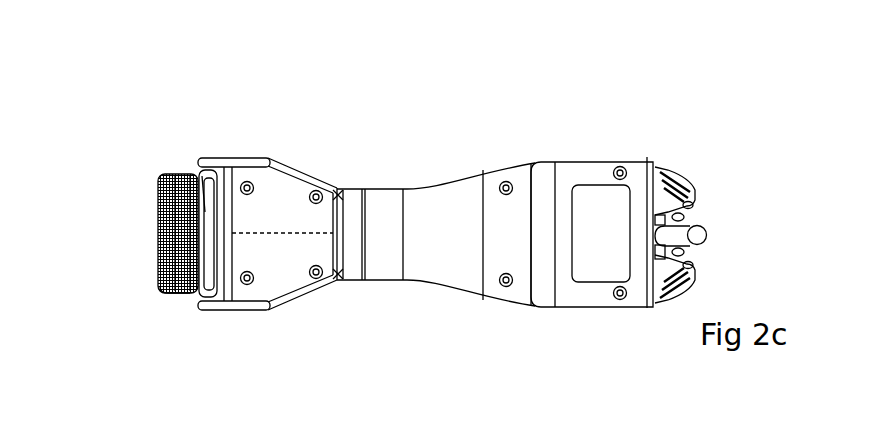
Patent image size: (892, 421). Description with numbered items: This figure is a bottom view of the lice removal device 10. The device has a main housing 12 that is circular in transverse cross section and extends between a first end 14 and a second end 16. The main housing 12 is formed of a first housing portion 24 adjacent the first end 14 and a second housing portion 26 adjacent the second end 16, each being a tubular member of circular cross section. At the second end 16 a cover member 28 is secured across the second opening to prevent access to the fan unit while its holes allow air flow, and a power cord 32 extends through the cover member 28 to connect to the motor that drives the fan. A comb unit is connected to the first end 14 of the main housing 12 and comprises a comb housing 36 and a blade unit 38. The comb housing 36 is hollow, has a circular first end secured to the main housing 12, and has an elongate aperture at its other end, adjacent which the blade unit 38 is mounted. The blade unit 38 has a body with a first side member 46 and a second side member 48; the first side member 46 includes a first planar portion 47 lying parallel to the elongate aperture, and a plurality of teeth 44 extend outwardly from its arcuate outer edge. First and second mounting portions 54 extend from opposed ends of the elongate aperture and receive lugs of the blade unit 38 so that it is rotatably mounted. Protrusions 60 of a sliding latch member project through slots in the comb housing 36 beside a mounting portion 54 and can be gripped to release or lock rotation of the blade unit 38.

The lice removal device 10 is at (520, 108).
The main housing 12 is at (484, 284).
The first end 14 is at (365, 186).
The second end 16 is at (655, 158).
The first housing portion 24 is at (423, 200).
The second housing portion 26 is at (585, 170).
The cover member 28 is at (694, 212).
The power cord 32 is at (707, 236).
The comb housing 36 is at (285, 283).
The blade unit 38 is at (165, 305).
The teeth 44 is at (156, 184).
The first side member 46 is at (203, 268).
The first planar portion 47 is at (223, 174).
The second side member 48 is at (199, 172).
The mounting portions 54 is at (204, 210).
The protrusions 60 is at (263, 157).